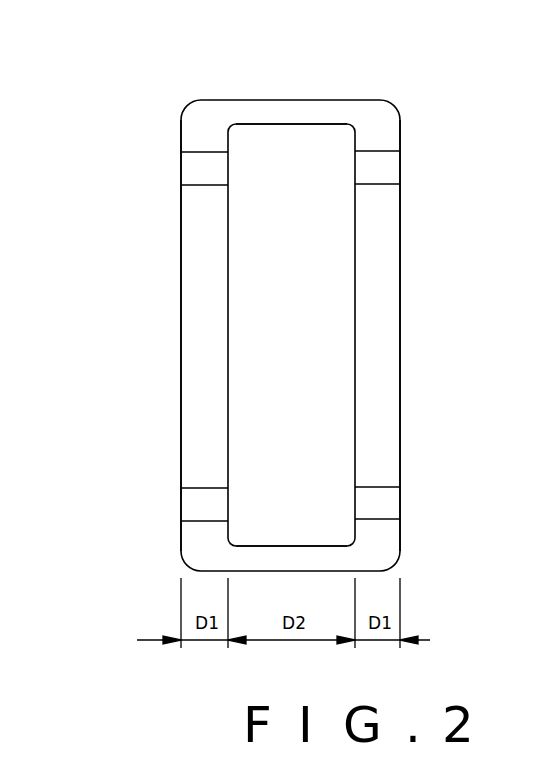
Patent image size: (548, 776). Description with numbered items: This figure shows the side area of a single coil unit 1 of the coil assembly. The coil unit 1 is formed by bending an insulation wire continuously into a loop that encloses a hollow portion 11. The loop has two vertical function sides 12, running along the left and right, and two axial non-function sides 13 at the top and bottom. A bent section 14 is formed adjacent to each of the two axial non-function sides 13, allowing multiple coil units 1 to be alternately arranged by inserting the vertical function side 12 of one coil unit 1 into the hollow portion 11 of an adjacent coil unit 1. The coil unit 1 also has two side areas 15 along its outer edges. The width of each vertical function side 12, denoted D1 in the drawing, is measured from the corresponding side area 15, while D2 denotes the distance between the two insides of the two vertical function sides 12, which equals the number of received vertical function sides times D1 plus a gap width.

The coil unit 1 is at (267, 298).
The hollow portion 11 is at (295, 386).
The vertical function side 12 is at (197, 334).
The axial non-function side 13 is at (303, 113).
The bent section 14 is at (373, 137).
The side area 15 is at (400, 338).